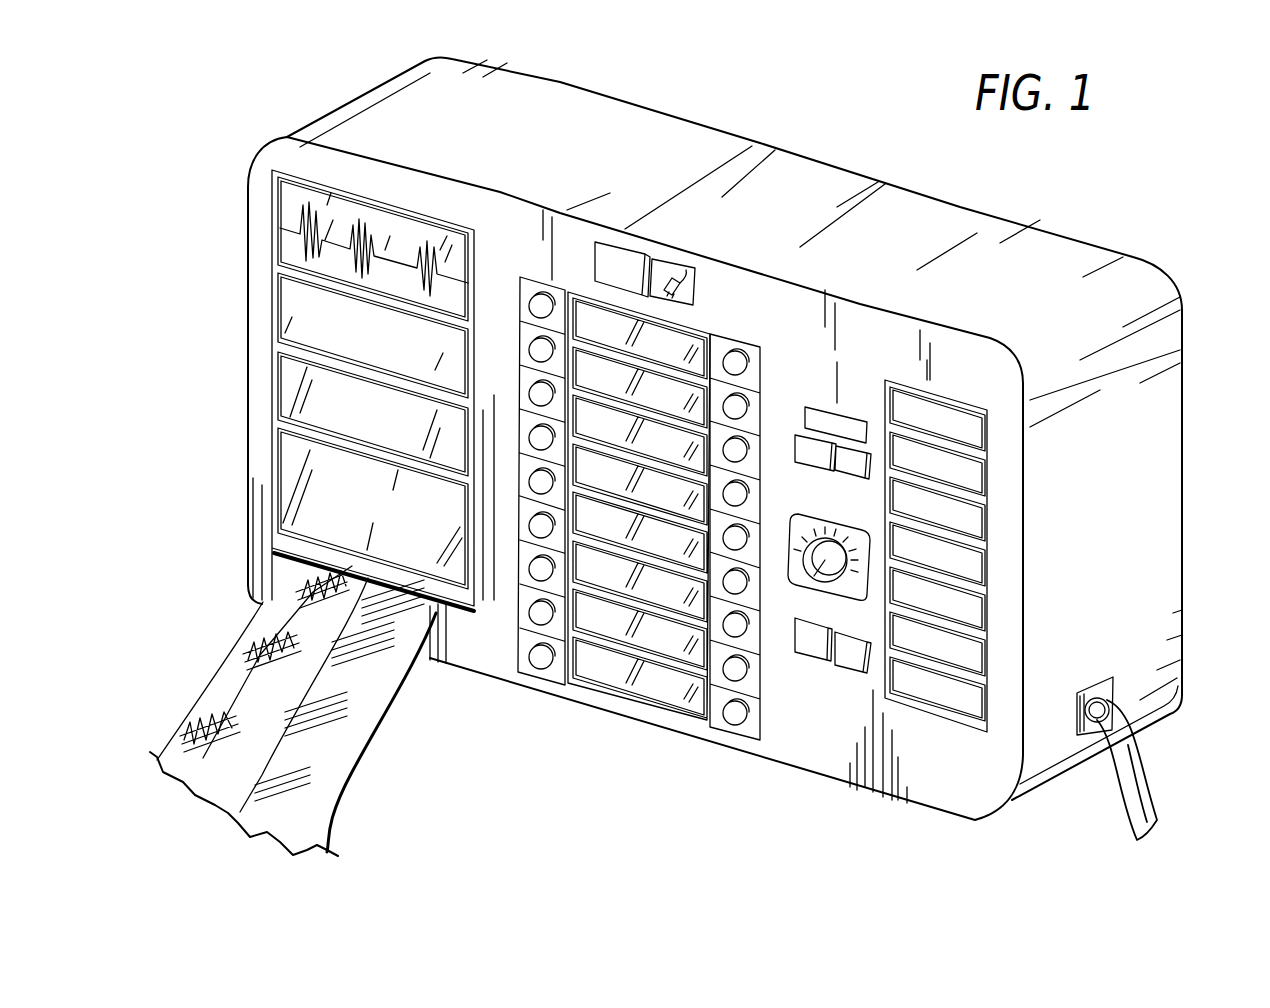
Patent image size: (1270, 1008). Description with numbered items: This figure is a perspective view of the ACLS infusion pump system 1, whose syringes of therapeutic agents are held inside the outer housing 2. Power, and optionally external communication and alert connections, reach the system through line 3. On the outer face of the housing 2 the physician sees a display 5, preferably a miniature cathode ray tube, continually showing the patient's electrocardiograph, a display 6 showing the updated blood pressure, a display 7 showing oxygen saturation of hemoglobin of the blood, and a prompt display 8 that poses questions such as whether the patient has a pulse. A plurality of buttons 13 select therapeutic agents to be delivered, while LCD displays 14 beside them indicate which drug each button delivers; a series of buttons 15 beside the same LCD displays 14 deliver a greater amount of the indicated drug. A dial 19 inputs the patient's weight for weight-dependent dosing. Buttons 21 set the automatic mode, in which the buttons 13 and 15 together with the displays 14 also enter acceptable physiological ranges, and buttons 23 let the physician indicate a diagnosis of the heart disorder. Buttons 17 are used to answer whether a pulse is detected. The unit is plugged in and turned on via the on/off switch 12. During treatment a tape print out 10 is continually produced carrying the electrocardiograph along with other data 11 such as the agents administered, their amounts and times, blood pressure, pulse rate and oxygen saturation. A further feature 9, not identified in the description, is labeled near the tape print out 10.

The ACLS infusion pump system 1 is at (1133, 239).
The outer housing 2 is at (1172, 390).
The line 3 is at (1140, 772).
The display 5 is at (397, 221).
The display 6 is at (283, 325).
The display 7 is at (287, 384).
The prompt display 8 is at (290, 454).
The paper outlet slot 9 is at (262, 606).
The tape print out 10 is at (220, 651).
The data 11 is at (360, 717).
The on/off switch 12 is at (630, 252).
The buttons 13 is at (500, 680).
The LCD displays 14 is at (600, 670).
The buttons 15 is at (776, 739).
The buttons 17 is at (860, 488).
The dial 19 is at (812, 587).
The buttons 21 is at (805, 655).
The buttons 23 is at (1004, 715).